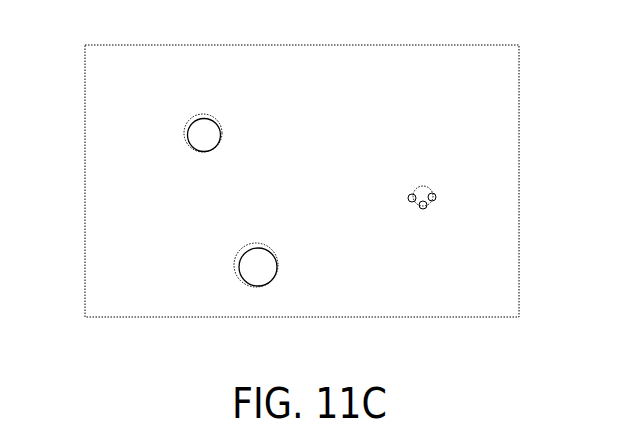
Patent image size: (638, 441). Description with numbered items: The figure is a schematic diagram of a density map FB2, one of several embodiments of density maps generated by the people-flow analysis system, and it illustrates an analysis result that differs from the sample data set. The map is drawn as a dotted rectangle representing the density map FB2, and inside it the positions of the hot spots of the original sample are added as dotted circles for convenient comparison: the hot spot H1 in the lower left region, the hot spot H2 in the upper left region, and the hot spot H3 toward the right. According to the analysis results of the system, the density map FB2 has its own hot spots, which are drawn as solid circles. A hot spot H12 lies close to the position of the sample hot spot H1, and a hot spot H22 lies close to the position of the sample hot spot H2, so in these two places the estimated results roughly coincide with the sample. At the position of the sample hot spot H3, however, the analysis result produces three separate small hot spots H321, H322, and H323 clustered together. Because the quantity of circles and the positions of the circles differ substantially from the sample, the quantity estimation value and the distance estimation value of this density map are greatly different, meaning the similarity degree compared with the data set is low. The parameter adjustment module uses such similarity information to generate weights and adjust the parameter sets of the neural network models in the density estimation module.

The density map FB2 is at (432, 45).
The hot spot H1 is at (238, 253).
The hot spot H12 is at (243, 248).
The hot spot H2 is at (195, 120).
The hot spot H22 is at (197, 117).
The hot spot H3 is at (432, 190).
The hot spot H321 is at (412, 202).
The hot spot H322 is at (422, 209).
The hot spot H323 is at (434, 200).